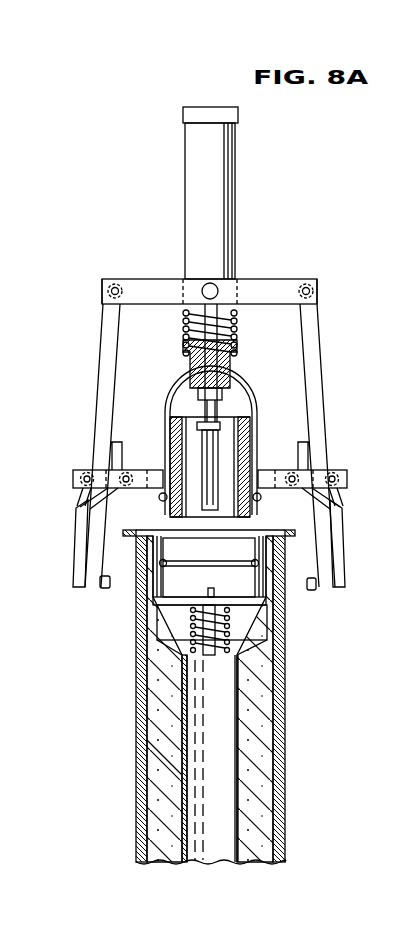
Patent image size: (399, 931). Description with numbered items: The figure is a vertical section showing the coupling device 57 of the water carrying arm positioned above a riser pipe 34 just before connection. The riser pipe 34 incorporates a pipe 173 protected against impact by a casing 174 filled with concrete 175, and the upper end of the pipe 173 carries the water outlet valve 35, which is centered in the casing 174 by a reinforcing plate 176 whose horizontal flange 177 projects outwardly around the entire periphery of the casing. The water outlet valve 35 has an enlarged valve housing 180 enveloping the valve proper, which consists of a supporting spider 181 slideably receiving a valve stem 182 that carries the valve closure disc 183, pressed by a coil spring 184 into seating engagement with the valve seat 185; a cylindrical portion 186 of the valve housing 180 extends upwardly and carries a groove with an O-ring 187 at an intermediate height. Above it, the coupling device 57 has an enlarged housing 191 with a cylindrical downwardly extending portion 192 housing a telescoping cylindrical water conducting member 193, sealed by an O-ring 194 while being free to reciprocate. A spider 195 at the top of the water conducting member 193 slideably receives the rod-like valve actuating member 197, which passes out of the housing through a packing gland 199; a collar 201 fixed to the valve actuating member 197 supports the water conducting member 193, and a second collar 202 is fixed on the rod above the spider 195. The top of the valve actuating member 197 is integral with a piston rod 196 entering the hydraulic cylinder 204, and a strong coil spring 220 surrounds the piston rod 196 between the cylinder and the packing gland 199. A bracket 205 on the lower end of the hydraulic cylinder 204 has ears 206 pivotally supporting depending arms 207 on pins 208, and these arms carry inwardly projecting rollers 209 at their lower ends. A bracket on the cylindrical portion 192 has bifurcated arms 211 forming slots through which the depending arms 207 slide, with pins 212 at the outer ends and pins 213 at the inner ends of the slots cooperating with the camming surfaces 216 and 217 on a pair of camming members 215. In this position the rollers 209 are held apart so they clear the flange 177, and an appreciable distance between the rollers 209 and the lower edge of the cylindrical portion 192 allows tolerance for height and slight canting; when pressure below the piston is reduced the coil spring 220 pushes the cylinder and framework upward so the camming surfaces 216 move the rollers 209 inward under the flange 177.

The hydraulic cylinder 204 is at (236, 186).
The bracket 205 is at (263, 292).
The ears 206 is at (102, 281).
The depending arms 207 is at (106, 346).
The pins 208 is at (115, 284).
The bifurcated arms 211 is at (73, 472).
The pins 212 is at (87, 473).
The pins 213 is at (127, 473).
The camming members 215 is at (76, 538).
The camming surfaces 216 is at (83, 493).
The camming surfaces 217 is at (112, 498).
The rollers 209 is at (102, 588).
The coil spring 220 is at (183, 323).
The piston rod 196 is at (237, 323).
The packing gland 199 is at (232, 363).
The second collar 202 is at (198, 395).
The housing 191 is at (172, 375).
The cylindrical downwardly extending portion 192 is at (168, 425).
The cylindrical water conducting member 193 is at (252, 436).
The spider 195 is at (222, 421).
The collar 201 is at (221, 431).
The valve actuating member 197 is at (214, 501).
The O-ring 194 is at (159, 498).
The coupling device 57 is at (330, 393).
The reinforcing plate 176 is at (263, 533).
The horizontal flange 177 is at (137, 544).
The casing 174 is at (284, 777).
The concrete 175 is at (152, 754).
The valve stem 182 is at (183, 668).
The pipe 173 is at (240, 833).
The cylindrical portion 186 is at (160, 592).
The valve seat 185 is at (268, 596).
The valve closure disc 183 is at (235, 594).
The O-ring 187 is at (199, 571).
The valve housing 180 is at (150, 624).
The coil spring 184 is at (235, 638).
The supporting spider 181 is at (216, 650).
The water outlet valve 35 is at (276, 636).
The riser pipe 34 is at (288, 735).